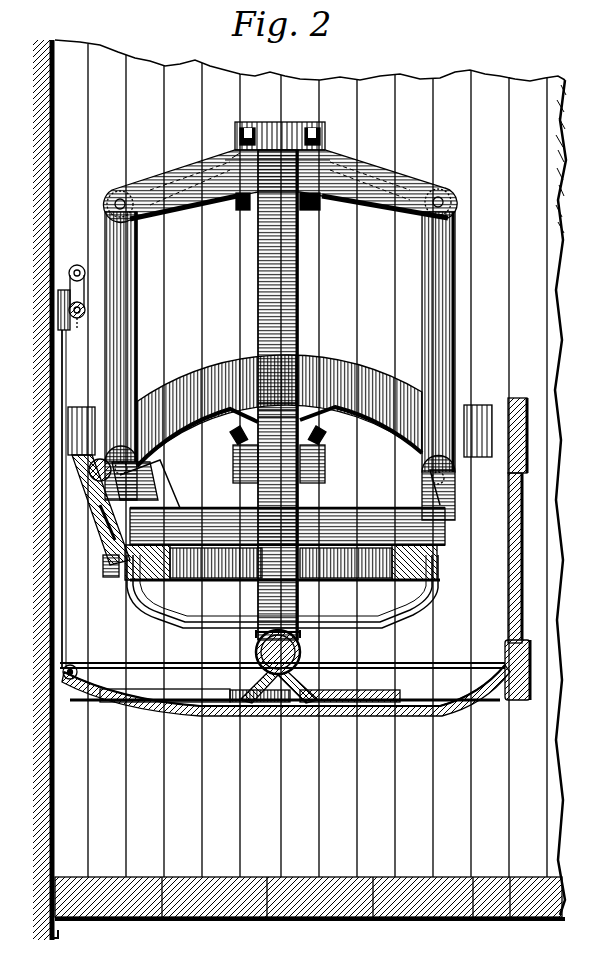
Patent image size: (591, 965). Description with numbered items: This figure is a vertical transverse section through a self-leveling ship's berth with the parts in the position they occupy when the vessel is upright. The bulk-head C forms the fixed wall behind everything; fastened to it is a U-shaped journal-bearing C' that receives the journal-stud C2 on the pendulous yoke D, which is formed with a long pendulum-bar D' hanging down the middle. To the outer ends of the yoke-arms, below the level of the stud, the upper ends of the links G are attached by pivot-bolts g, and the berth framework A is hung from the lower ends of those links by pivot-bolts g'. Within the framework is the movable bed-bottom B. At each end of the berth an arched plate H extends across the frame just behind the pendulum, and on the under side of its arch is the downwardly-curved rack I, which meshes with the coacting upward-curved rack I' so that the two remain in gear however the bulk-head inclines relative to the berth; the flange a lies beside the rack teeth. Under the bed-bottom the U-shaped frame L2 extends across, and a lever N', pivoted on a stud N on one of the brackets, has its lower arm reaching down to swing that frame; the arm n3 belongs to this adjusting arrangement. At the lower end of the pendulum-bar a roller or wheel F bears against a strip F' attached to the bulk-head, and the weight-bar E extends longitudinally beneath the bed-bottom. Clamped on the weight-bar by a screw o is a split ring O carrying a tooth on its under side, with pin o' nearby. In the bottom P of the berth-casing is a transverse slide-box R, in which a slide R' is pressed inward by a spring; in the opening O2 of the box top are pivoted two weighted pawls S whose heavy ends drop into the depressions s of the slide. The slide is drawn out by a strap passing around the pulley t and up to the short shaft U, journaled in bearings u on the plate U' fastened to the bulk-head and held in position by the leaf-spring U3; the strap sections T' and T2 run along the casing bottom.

The bulk-head C is at (299, 490).
The U-shaped journal-bearing C' is at (296, 108).
The journal-stud C2 is at (235, 146).
The pendulous yoke D is at (281, 175).
The pendulum-bar D' is at (287, 395).
The pivot-bolts g is at (288, 197).
The pivot-bolts g' is at (280, 441).
The links G is at (140, 328).
The framework of the berth A is at (322, 355).
The arc tooth a is at (352, 383).
The downwardly-curved rack I is at (320, 454).
The coacting rack I' is at (234, 454).
The bed-bottom B is at (335, 510).
The arched plate H is at (232, 581).
The stud N is at (282, 550).
The lever N' is at (130, 479).
The inclined arm n3 is at (98, 516).
The U-shaped frame L2 is at (212, 630).
The screw o is at (301, 613).
The split ring O is at (256, 655).
The opening O2 is at (215, 712).
The pin o' is at (283, 716).
The roller or wheel F is at (235, 640).
The strip F' is at (296, 515).
The weight-bar E is at (306, 655).
The bar section T' is at (271, 687).
The bar section T2 is at (340, 692).
The pulley t is at (72, 664).
The slide-box R is at (286, 702).
The slide R' is at (229, 727).
The bottom of the berth-casing P is at (420, 710).
The weighted pawls S is at (296, 716).
The depressions s is at (258, 714).
The short shaft U is at (71, 309).
The plate U' is at (74, 293).
The leaf-spring U3 is at (72, 268).
The bearings u is at (66, 312).